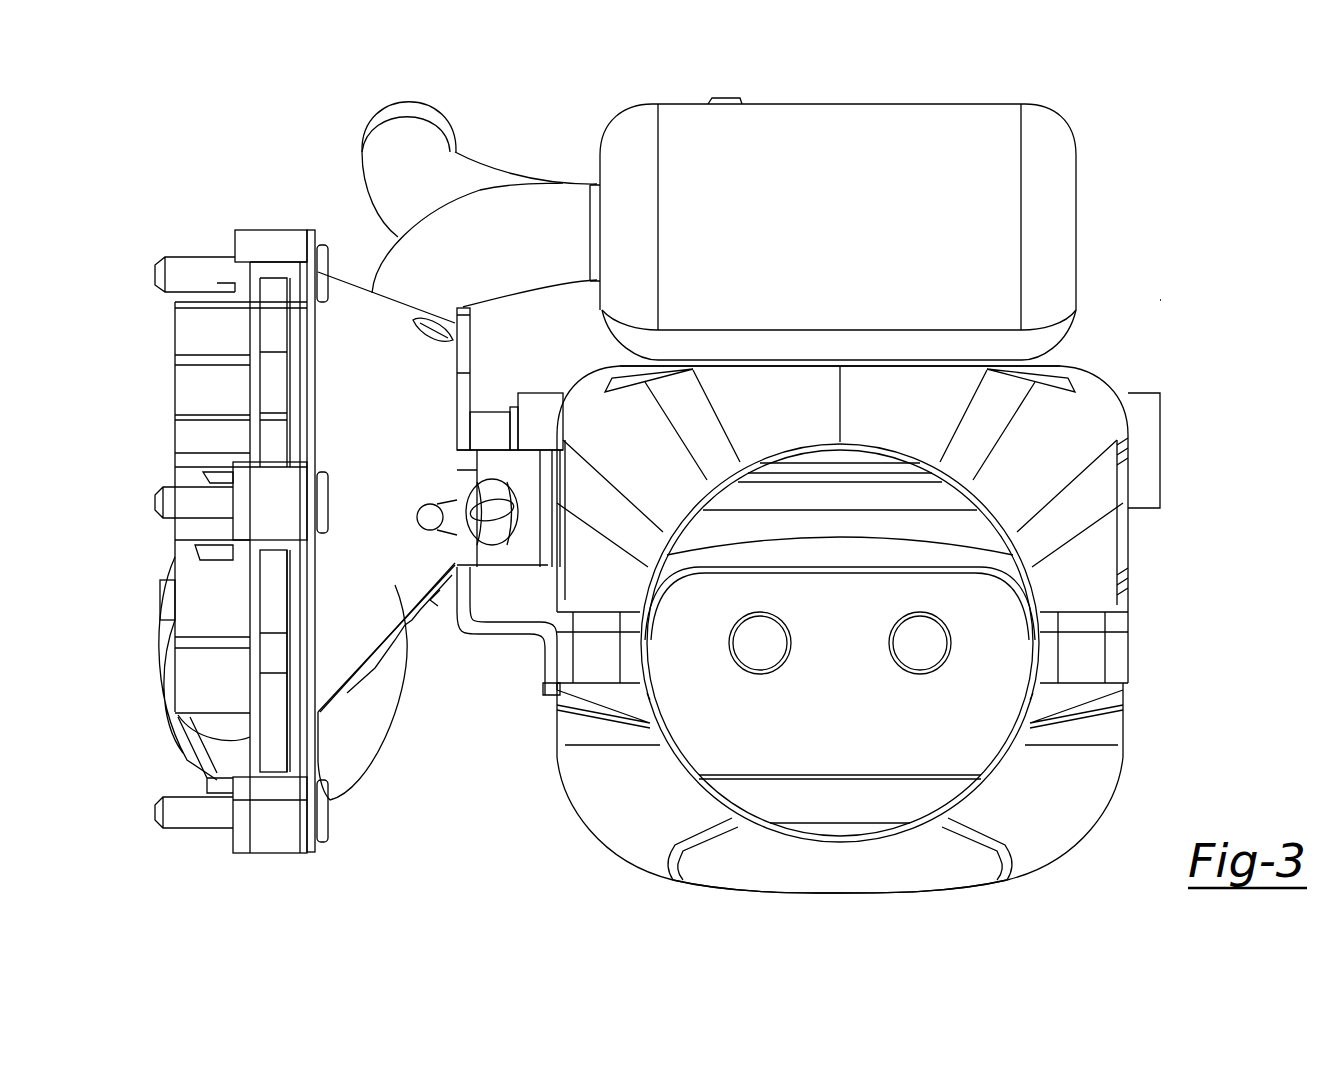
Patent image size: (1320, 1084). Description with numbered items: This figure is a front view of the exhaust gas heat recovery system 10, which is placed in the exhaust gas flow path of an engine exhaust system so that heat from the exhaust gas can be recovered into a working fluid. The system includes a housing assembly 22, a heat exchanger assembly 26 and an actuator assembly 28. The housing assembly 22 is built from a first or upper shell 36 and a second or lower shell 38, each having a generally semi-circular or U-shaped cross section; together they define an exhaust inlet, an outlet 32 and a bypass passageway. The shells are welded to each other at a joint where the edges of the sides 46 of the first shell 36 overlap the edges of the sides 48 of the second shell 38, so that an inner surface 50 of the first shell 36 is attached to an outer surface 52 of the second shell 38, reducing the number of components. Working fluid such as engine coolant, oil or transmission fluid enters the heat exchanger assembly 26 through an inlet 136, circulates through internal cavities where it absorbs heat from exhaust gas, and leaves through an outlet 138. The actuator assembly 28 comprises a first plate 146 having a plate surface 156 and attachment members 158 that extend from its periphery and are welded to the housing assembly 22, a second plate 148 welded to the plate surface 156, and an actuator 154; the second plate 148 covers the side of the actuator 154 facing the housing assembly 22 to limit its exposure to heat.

The exhaust gas heat recovery system 10 is at (1167, 294).
The housing assembly 22 is at (1174, 578).
The heat exchanger assembly 26 is at (1087, 116).
The actuator assembly 28 is at (256, 877).
The outlet 32 is at (826, 832).
The first shell 36 is at (1084, 400).
The second shell 38 is at (1100, 814).
The sides of the first shell 46 is at (548, 582).
The sides of the second shell 48 is at (557, 708).
The inner surface 50 is at (655, 640).
The outer surface 52 is at (647, 693).
The inlet 136 is at (493, 183).
The outlet 138 is at (403, 288).
The first plate 146 is at (461, 635).
The second plate 148 is at (348, 270).
The actuator 154 is at (185, 338).
The plate surface 156 is at (458, 605).
The attachment members 158 is at (493, 460).